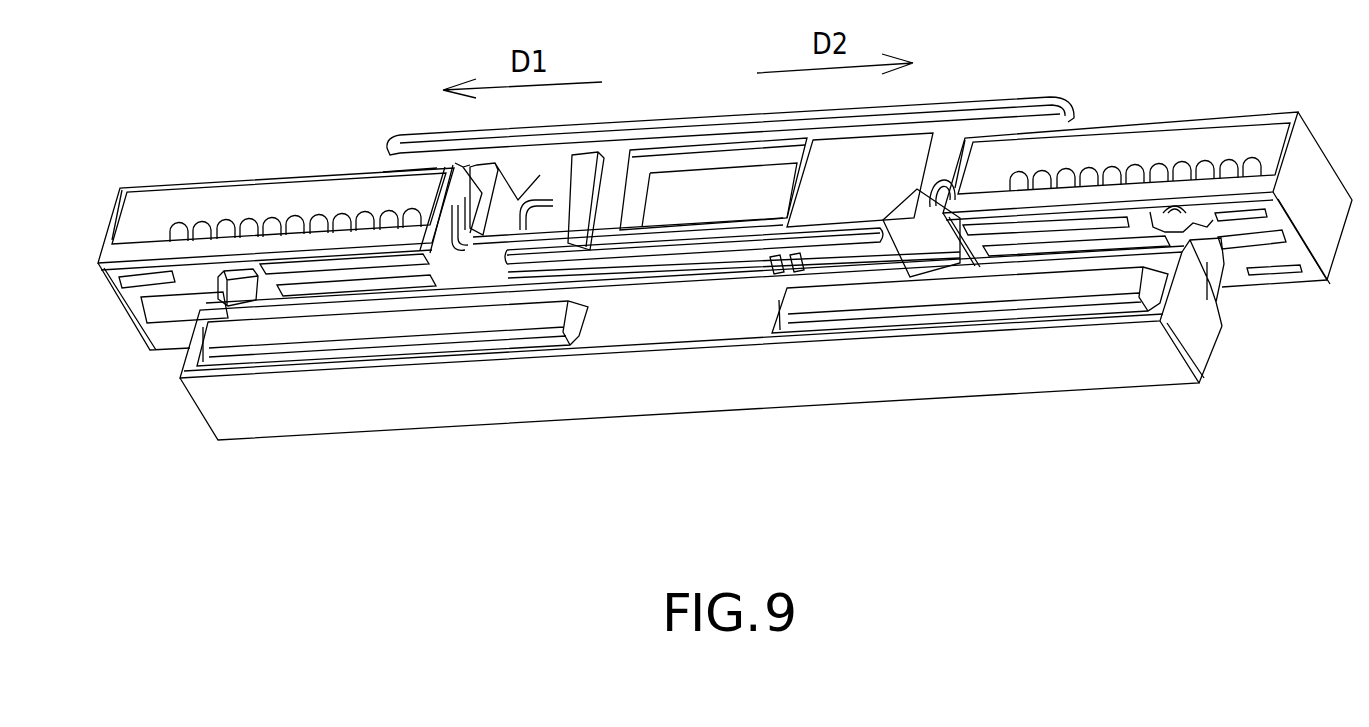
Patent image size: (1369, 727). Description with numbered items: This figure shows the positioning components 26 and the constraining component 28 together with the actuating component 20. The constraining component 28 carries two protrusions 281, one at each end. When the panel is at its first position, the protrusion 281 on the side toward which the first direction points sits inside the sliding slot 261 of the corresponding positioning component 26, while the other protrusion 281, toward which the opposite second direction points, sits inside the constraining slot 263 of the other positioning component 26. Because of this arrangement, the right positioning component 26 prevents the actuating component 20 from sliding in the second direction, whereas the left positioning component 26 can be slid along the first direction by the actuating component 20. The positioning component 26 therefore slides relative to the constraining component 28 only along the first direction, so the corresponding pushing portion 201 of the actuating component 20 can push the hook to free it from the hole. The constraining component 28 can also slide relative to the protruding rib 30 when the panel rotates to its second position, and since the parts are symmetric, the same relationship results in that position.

The actuating component 20 is at (728, 147).
The pushing portion 201 is at (598, 157).
The positioning component 26 is at (703, 200).
The sliding slot 261 is at (172, 308).
The constraining slot 263 is at (1215, 262).
The constraining component 28 is at (708, 370).
The protrusion 281 is at (240, 292).
The protruding rib 30 is at (342, 333).